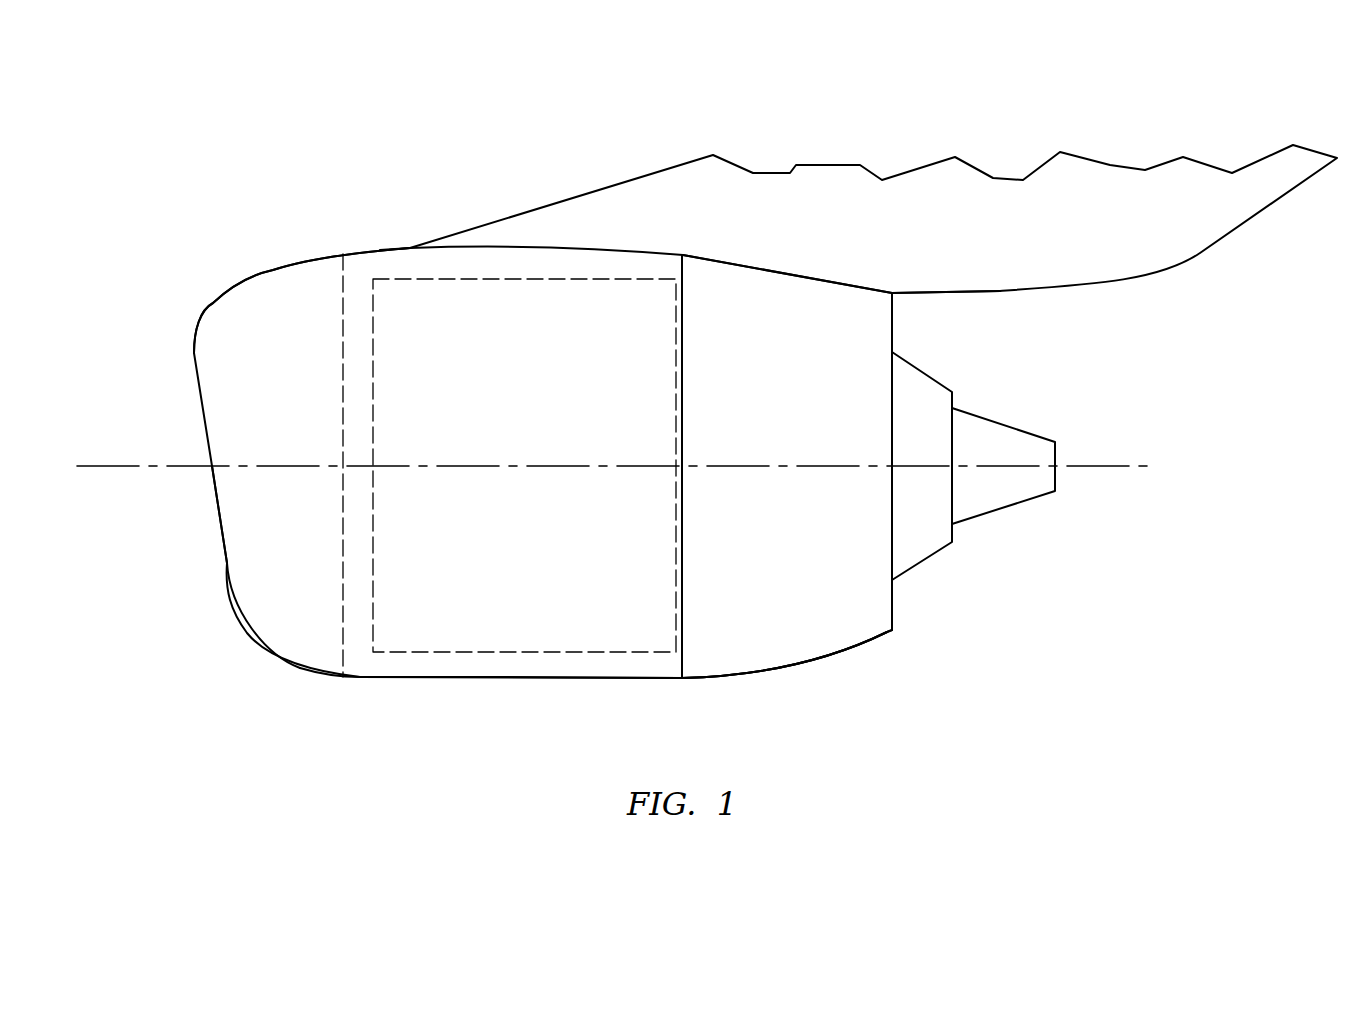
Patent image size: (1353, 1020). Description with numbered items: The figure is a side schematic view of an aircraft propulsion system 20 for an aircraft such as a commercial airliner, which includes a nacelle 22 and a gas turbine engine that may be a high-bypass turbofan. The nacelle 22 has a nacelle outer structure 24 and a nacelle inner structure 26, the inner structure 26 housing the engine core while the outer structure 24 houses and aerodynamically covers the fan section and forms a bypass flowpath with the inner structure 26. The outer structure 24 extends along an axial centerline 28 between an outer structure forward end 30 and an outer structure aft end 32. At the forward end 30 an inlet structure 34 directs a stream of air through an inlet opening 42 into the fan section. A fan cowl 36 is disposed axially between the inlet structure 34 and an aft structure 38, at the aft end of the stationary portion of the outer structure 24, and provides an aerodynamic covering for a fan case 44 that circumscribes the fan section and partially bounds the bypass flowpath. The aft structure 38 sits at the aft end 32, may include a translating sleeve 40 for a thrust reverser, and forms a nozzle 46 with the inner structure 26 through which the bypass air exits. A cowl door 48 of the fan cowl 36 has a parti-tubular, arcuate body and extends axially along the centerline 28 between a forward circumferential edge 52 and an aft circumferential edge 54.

The aircraft propulsion system 20 is at (192, 163).
The nacelle 22 is at (376, 254).
The nacelle outer structure 24 is at (372, 678).
The nacelle inner structure 26 is at (920, 377).
The axial centerline 28 is at (116, 468).
The outer structure forward end 30 is at (198, 328).
The outer structure aft end 32 is at (893, 318).
The inlet structure 34 is at (274, 272).
The fan cowl 36 is at (400, 264).
The aft structure 38 is at (775, 299).
The translating sleeve 40 is at (783, 650).
The inlet opening 42 is at (227, 565).
The fan case 44 is at (500, 655).
The nozzle 46 is at (893, 607).
The cowl door 48 is at (577, 663).
The forward circumferential edge 52 is at (343, 651).
The aft circumferential edge 54 is at (683, 663).